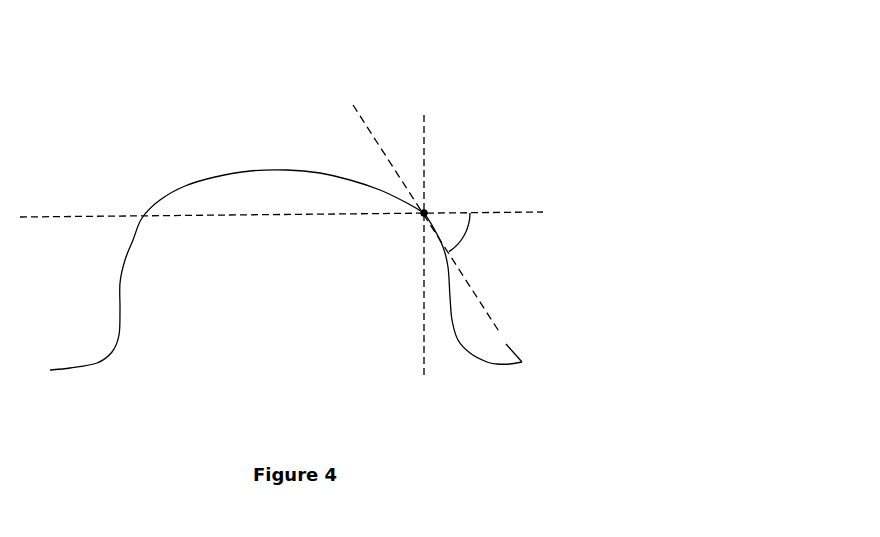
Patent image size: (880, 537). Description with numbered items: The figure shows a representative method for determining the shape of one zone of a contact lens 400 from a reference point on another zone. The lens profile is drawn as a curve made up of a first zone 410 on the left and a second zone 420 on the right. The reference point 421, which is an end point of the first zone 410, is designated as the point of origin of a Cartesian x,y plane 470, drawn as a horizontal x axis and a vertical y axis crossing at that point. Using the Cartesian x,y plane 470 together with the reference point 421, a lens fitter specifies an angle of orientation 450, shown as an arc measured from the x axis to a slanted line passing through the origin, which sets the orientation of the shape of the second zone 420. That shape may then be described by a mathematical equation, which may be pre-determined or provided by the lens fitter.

The contact lens 400 is at (528, 48).
The first zone 410 is at (204, 182).
The second zone 420 is at (491, 359).
The reference point 421 is at (428, 210).
The angle of orientation 450 is at (471, 222).
The Cartesian x,y plane 470 is at (424, 158).